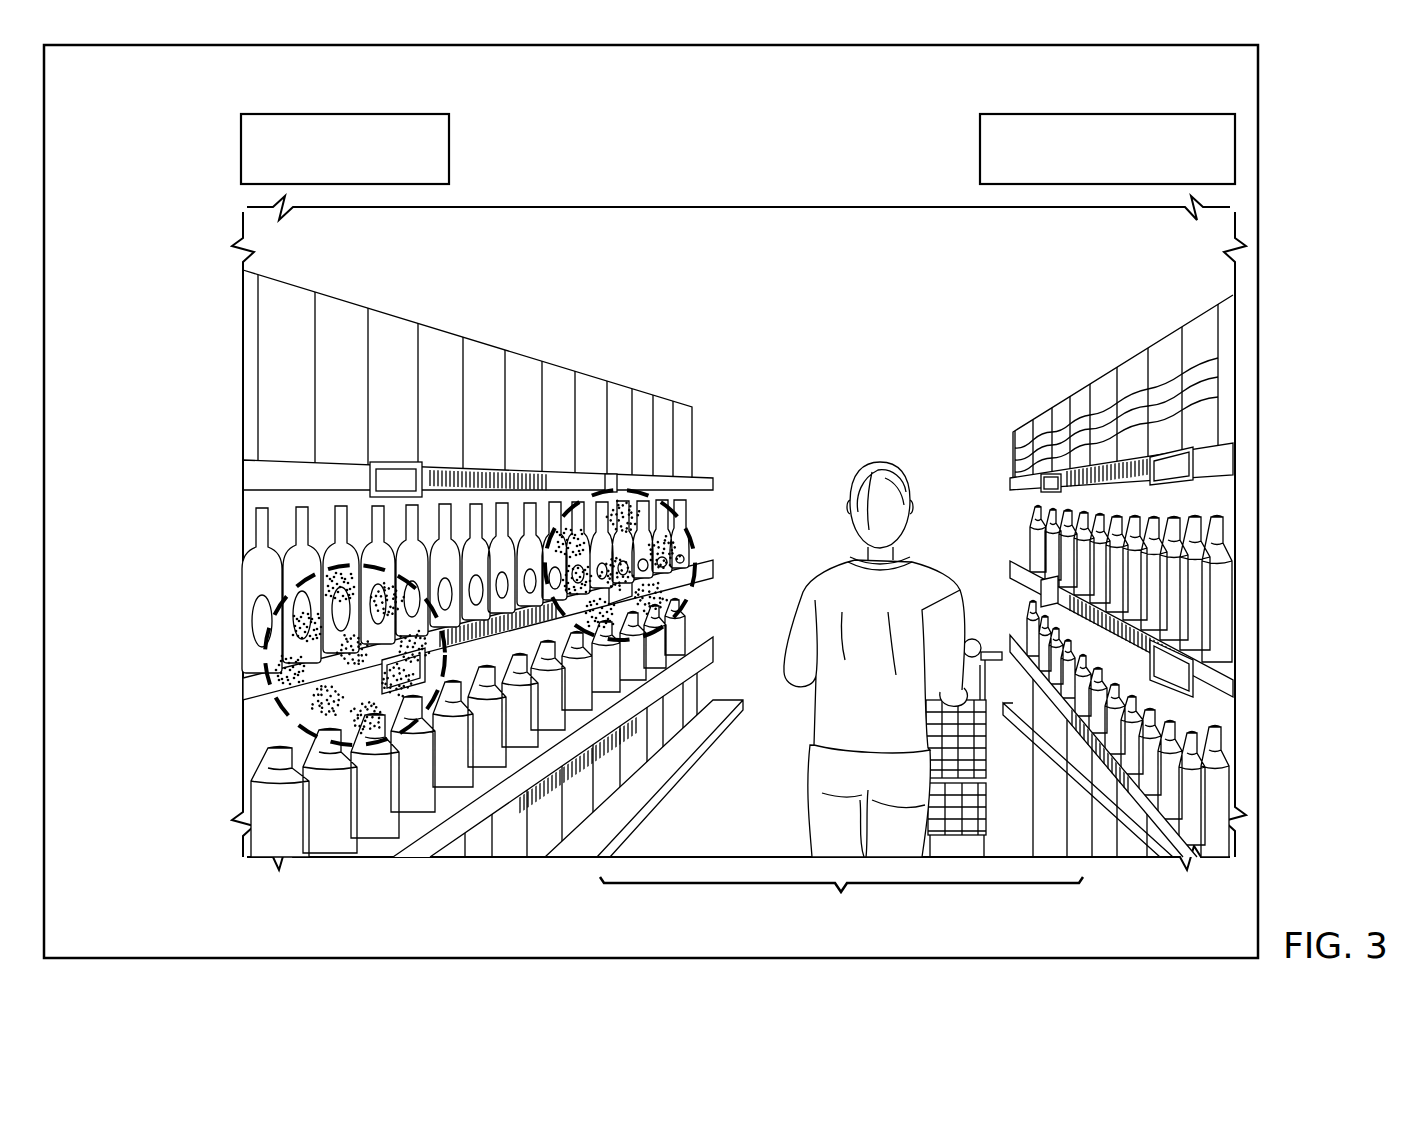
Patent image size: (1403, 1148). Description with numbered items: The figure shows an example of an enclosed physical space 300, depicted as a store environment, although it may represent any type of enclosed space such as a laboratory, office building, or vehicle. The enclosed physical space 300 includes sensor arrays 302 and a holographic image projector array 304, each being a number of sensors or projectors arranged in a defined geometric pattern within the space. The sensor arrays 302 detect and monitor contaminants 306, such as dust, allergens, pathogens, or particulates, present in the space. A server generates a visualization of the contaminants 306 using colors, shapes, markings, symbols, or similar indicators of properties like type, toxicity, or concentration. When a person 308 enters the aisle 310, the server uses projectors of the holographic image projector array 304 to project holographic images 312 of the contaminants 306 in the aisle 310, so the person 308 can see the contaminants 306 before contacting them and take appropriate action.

The enclosed physical space 300 is at (696, 155).
The sensor arrays 302 is at (345, 113).
The holographic image projector array 304 is at (1107, 113).
The contaminants 306 is at (190, 736).
The person 308 is at (884, 466).
The aisle 310 is at (841, 915).
The holographic images 312 is at (210, 625).